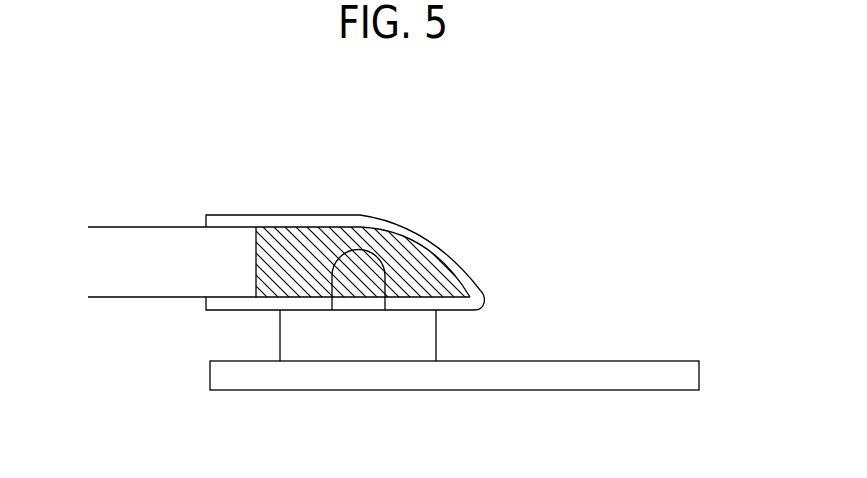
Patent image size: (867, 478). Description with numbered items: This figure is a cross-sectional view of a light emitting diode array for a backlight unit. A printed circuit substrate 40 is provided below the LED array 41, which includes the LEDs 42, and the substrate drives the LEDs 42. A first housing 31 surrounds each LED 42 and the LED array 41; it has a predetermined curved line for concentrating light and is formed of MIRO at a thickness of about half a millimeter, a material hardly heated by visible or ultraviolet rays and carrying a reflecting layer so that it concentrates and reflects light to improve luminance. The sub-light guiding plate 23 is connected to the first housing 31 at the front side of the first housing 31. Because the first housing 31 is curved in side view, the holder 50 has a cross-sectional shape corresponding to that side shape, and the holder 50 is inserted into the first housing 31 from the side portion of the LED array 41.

The sub-light guiding plate 23 is at (135, 275).
The first housing 31 is at (473, 288).
The printed circuit substrate 40 is at (497, 380).
The LED array 41 is at (347, 340).
The LED 42 is at (358, 248).
The holder 50 is at (398, 260).